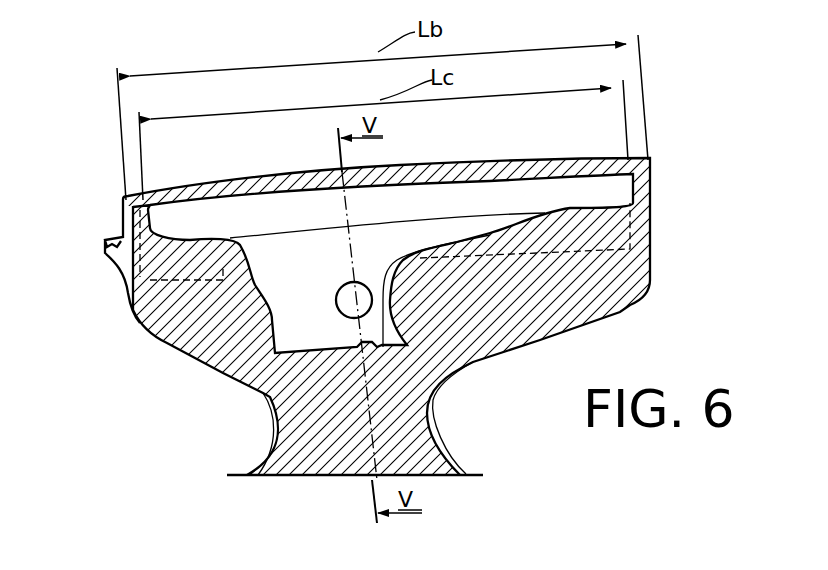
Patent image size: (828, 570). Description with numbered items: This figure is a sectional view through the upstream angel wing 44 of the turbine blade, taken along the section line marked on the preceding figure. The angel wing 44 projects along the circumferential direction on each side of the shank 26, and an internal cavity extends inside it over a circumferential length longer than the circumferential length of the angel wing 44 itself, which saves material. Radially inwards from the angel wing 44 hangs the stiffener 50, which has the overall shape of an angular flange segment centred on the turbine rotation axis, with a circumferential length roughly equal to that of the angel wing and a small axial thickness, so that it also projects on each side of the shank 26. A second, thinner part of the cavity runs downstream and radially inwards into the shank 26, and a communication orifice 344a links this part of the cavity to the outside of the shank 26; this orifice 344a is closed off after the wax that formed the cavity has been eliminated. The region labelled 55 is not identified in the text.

The upstream angel wing 44 is at (215, 196).
The stiffener 50 is at (155, 317).
The communication orifice 344a is at (346, 305).
The lower web fillet surface 55 is at (210, 350).
The shank 26 is at (440, 327).